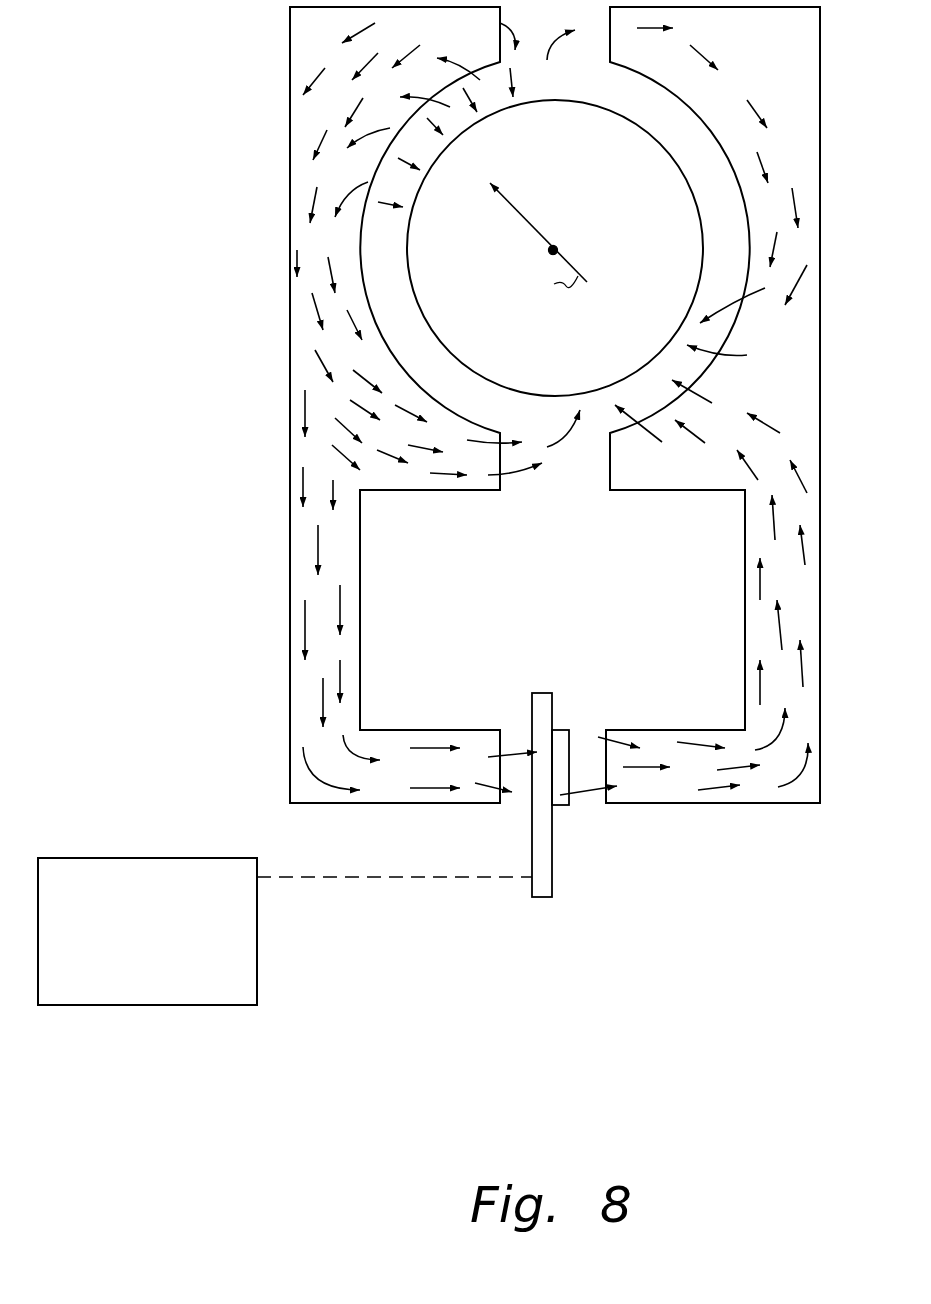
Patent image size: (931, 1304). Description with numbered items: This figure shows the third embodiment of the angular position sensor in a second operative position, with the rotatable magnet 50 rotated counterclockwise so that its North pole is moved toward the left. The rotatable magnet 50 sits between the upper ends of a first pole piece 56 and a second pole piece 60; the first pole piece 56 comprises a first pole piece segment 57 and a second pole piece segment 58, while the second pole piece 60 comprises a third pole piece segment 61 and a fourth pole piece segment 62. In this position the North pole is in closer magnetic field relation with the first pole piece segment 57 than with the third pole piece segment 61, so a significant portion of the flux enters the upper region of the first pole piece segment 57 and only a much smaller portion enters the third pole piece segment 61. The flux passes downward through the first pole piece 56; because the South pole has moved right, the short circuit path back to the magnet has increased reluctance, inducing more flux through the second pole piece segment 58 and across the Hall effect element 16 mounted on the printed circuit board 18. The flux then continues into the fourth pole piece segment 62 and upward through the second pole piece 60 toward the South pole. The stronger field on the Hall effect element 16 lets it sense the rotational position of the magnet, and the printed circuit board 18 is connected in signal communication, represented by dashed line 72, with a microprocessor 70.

The Hall effect element 16 is at (565, 807).
The printed circuit board 18 is at (546, 886).
The rotatable magnet 50 is at (618, 248).
The first pole piece 56 is at (290, 446).
The first pole piece segment 57 is at (273, 160).
The second pole piece segment 58 is at (505, 715).
The second pole piece 60 is at (820, 448).
The third pole piece segment 61 is at (848, 163).
The fourth pole piece segment 62 is at (738, 715).
The microprocessor 70 is at (258, 969).
The dashed line 72 is at (418, 878).